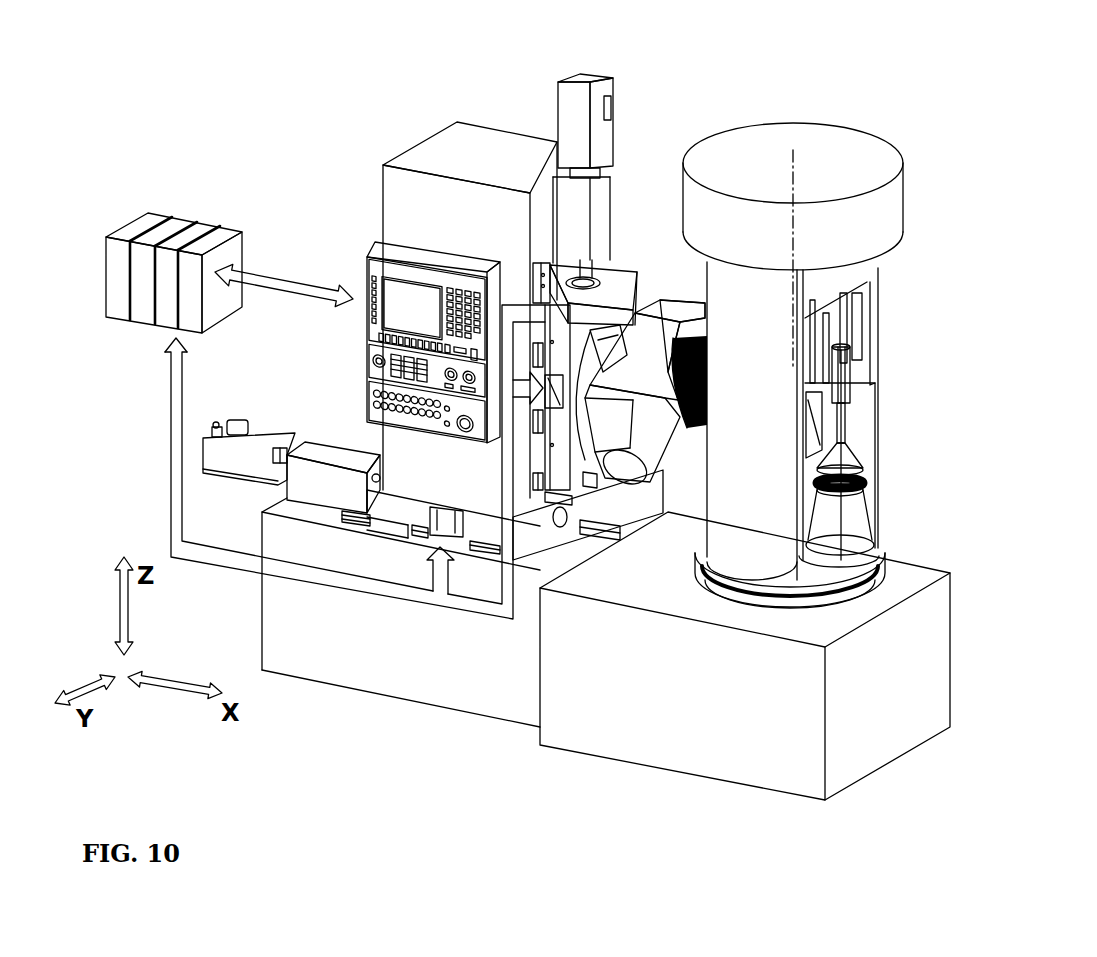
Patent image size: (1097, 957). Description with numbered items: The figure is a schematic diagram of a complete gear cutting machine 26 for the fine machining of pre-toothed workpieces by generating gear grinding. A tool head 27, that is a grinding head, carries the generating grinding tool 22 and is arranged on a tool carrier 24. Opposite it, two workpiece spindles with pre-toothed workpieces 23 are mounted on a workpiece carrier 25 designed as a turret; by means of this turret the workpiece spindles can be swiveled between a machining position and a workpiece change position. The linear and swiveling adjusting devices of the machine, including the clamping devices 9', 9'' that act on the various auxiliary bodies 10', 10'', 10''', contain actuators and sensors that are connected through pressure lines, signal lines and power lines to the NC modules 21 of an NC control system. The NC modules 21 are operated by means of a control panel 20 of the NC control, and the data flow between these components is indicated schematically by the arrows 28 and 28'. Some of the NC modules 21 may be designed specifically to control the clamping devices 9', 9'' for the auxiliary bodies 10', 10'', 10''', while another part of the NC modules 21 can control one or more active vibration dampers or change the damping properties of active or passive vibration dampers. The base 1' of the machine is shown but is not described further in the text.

The machine base 1' is at (365, 659).
The clamping device 9' is at (332, 620).
The clamping device 9'' is at (523, 645).
The auxiliary body 10' is at (355, 664).
The auxiliary body 10'' is at (492, 656).
The auxiliary body 10''' is at (561, 447).
The control panel 20 is at (398, 292).
The NC modules 21 is at (162, 232).
The generating grinding tool 22 is at (693, 315).
The pre-toothed workpieces 23 is at (707, 478).
The tool carrier 24 is at (465, 155).
The workpiece carrier 25 is at (830, 165).
The gear cutting machine 26 is at (480, 90).
The tool head 27 is at (643, 330).
The arrow 28 is at (284, 185).
The arrow 28' is at (327, 563).